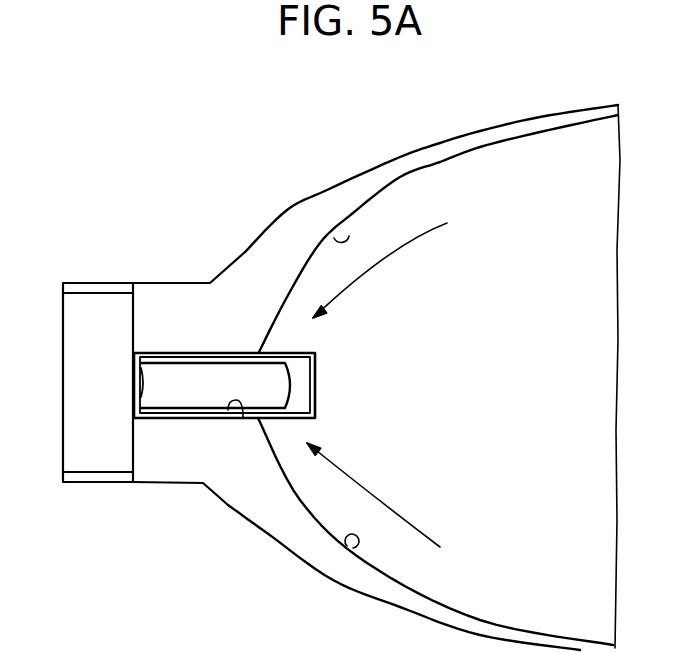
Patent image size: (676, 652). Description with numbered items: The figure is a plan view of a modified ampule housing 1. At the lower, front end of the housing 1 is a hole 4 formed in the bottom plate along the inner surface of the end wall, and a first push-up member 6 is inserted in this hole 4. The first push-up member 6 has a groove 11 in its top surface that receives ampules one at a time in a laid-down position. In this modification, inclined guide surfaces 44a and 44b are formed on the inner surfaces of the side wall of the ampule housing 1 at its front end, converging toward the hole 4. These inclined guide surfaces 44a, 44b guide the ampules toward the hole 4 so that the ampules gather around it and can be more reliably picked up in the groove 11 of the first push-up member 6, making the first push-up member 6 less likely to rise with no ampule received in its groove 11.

The ampule housing 1 is at (463, 135).
The hole 4 is at (243, 417).
The first push-up member 6 is at (183, 355).
The groove 11 is at (192, 393).
The inclined guide surface 44a is at (349, 236).
The inclined guide surface 44b is at (353, 548).